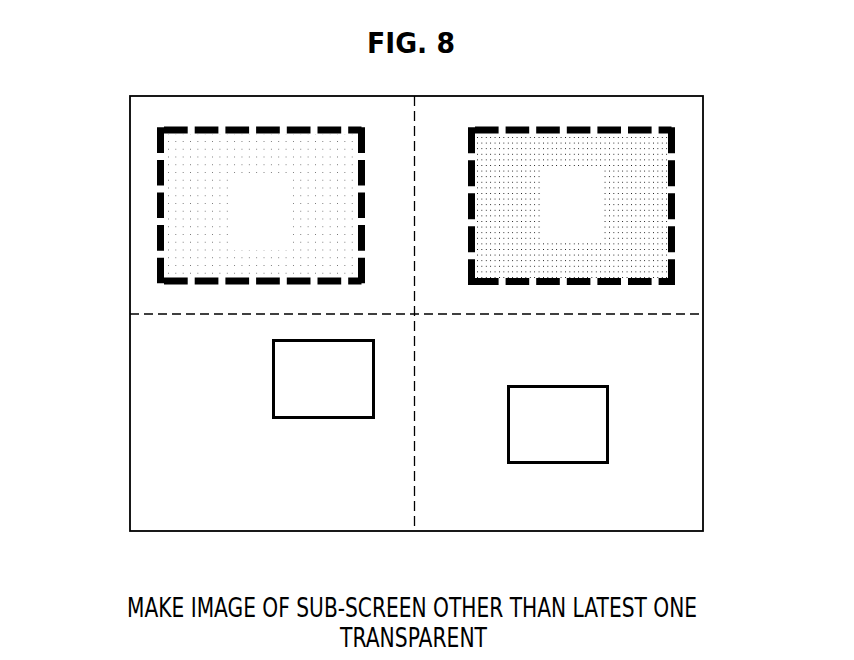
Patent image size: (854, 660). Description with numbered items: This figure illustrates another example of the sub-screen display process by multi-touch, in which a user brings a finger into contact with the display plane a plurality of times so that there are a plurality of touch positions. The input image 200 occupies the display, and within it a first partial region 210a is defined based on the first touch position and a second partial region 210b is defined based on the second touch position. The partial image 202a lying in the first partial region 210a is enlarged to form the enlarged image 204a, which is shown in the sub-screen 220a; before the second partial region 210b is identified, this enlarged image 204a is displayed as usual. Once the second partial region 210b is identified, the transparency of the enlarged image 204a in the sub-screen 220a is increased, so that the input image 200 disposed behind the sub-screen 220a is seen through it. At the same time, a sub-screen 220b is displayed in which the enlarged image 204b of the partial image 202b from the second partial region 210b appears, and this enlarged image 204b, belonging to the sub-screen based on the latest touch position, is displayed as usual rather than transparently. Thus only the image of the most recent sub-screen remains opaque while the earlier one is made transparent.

The input image 200 is at (530, 97).
The enlarged image 204a is at (192, 178).
The enlarged image 204b is at (640, 180).
The sub-screen 220a is at (158, 229).
The sub-screen 220b is at (672, 229).
The partial image 202a is at (528, 433).
The partial image 202b is at (310, 402).
The first partial region 210a is at (587, 465).
The second partial region 210b is at (353, 419).